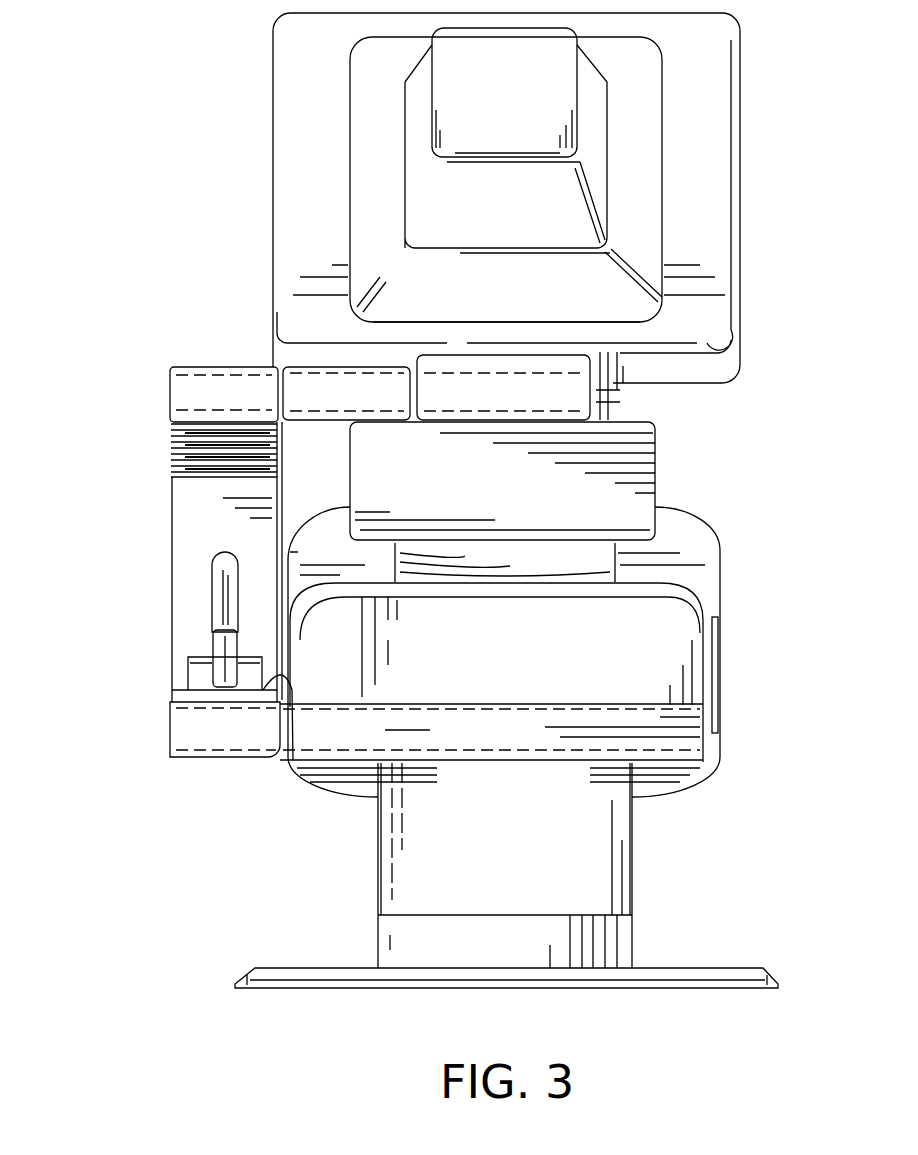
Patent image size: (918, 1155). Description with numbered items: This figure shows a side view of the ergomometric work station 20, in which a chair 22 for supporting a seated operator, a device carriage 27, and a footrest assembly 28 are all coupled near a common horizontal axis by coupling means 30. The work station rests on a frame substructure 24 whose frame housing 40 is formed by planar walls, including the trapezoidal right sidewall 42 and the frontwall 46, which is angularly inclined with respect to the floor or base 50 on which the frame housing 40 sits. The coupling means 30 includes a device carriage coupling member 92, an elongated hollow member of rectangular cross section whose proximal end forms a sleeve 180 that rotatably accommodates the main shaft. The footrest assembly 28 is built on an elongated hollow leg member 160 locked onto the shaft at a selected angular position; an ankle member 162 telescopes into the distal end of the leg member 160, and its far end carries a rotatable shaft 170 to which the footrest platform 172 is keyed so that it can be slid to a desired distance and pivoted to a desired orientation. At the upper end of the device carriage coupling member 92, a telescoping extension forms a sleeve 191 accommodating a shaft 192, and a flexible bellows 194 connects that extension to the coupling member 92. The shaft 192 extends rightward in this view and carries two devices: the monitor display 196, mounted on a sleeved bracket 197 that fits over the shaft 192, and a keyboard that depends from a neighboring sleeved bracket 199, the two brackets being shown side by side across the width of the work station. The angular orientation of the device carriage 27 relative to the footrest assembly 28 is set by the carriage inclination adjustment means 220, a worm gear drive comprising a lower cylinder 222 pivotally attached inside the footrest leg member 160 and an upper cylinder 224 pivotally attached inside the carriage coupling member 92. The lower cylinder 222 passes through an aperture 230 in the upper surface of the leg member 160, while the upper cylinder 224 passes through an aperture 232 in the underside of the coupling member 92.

The ergomometric work station 20 is at (149, 133).
The monitor display 196 is at (710, 142).
The sleeved bracket 199 is at (347, 373).
The sleeve 191 is at (183, 375).
The shaft 192 is at (180, 405).
The sleeved bracket 197 is at (622, 398).
The flexible bellows 194 is at (180, 465).
The device carriage 27 is at (114, 511).
The device carriage coupling member 92 is at (190, 535).
The chair 22 is at (705, 547).
The aperture 232 is at (215, 572).
The upper cylinder 224 is at (220, 608).
The carriage inclination adjustment means 220 is at (182, 650).
The lower cylinder 222 is at (223, 665).
The coupling means 30 is at (153, 720).
The leg member 160 is at (200, 690).
The sleeve 180 is at (262, 692).
The footrest assembly 28 is at (156, 779).
The ankle member 162 is at (213, 758).
The rotatable shaft 170 is at (247, 743).
The aperture 230 is at (292, 760).
The footrest platform 172 is at (443, 680).
The right sidewall 42 is at (378, 884).
The frontwall 46 is at (495, 890).
The frame housing 40 is at (610, 883).
The base 50 is at (647, 978).
The frame substructure 24 is at (675, 831).